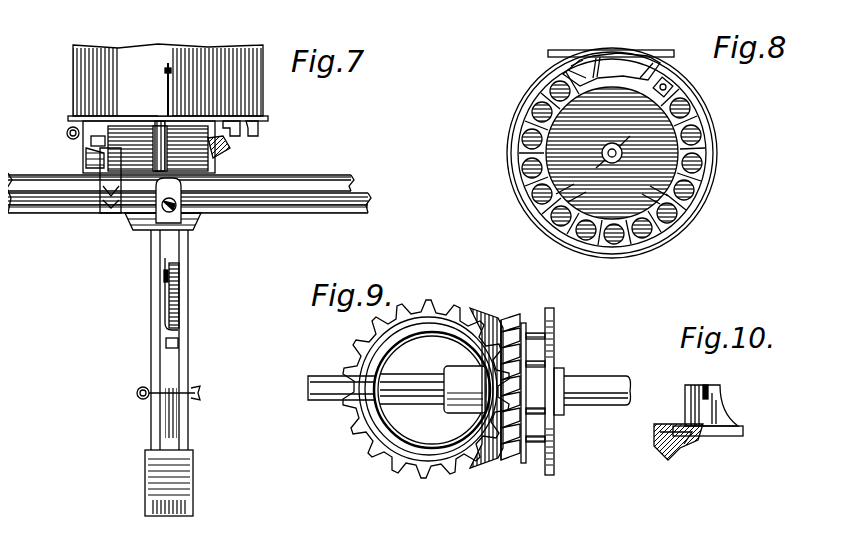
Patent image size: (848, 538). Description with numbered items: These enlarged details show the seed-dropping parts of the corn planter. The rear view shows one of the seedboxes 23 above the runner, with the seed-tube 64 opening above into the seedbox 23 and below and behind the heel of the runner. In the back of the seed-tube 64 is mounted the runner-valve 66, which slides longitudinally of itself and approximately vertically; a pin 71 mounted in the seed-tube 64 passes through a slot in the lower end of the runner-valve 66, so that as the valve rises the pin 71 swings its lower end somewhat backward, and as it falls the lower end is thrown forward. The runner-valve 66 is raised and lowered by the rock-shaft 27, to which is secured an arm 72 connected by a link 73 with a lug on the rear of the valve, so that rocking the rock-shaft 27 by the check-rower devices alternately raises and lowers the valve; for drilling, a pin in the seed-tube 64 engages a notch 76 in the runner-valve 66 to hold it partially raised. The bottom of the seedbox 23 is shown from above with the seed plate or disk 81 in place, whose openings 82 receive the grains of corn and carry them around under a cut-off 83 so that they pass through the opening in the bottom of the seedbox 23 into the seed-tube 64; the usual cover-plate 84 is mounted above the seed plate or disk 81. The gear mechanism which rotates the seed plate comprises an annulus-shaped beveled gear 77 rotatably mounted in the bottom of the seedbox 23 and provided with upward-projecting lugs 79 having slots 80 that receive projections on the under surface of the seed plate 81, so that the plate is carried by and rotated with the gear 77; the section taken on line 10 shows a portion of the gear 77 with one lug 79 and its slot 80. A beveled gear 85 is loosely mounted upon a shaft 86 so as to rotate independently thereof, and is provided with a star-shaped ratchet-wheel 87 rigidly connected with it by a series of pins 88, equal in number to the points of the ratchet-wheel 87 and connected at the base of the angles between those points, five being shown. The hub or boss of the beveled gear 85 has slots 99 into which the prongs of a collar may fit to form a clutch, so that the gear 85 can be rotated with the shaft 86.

In FIG. 7, the seedbox 23 is at (168, 82).
In FIG. 7, the rock-shaft 27 is at (350, 182).
In FIG. 7, the arm 72 is at (168, 216).
In FIG. 7, the seed-tube 64 is at (181, 341).
In FIG. 7, the runner-valve 66 is at (172, 296).
In FIG. 7, the link 73 is at (152, 300).
In FIG. 7, the notch 76 is at (156, 270).
In FIG. 7, the pin 71 is at (140, 392).
In FIG. 8, the seed plate or disk 81 is at (512, 107).
In FIG. 8, the openings 82 is at (516, 158).
In FIG. 8, the cut-off 83 is at (588, 48).
In FIG. 8, the cover-plate 84 is at (612, 153).
In FIG. 9, the section line 10 is at (352, 438).
In FIG. 9, the annulus-shaped beveled gear 77 is at (470, 318).
In FIG. 10, the annulus-shaped beveled gear 77 is at (672, 440).
In FIG. 9, the upward-projecting lugs 79 is at (500, 312).
In FIG. 10, the upward-projecting lugs 79 is at (682, 382).
In FIG. 9, the slots 80 is at (480, 320).
In FIG. 10, the slots 80 is at (698, 377).
In FIG. 9, the beveled gear 85 is at (518, 322).
In FIG. 9, the star-shaped ratchet-wheel 87 is at (548, 322).
In FIG. 9, the pins 88 is at (530, 356).
In FIG. 9, the slots 99 is at (553, 371).
In FIG. 9, the shaft 86 is at (586, 379).